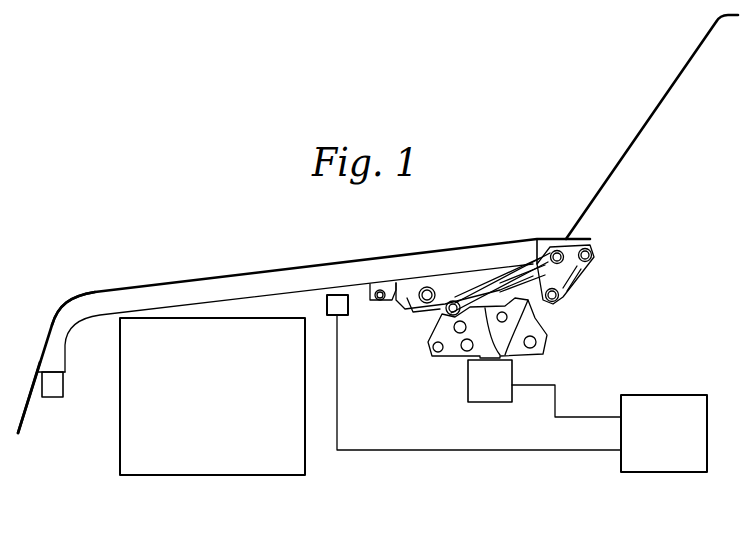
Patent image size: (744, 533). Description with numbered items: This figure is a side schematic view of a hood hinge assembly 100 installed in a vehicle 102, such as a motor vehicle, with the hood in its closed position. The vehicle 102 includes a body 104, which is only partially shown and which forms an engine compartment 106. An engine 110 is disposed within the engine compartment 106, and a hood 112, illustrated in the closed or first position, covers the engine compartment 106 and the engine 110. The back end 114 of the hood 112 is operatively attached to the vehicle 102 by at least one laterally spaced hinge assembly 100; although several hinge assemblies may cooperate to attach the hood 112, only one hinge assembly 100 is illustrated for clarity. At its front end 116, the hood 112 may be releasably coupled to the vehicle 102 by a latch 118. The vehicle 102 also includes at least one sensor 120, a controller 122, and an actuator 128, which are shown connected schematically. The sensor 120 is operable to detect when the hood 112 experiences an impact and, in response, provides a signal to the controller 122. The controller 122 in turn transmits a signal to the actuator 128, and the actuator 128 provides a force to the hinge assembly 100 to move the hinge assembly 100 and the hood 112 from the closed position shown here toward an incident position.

The hood hinge assembly 100 is at (589, 281).
The vehicle 102 is at (657, 103).
The body 104 is at (26, 420).
The engine compartment 106 is at (110, 355).
The engine 110 is at (120, 430).
The hood 112 is at (229, 274).
The back end 114 is at (526, 237).
The front end 116 is at (65, 307).
The latch 118 is at (53, 399).
The sensor 120 is at (352, 315).
The controller 122 is at (661, 395).
The actuator 128 is at (468, 378).